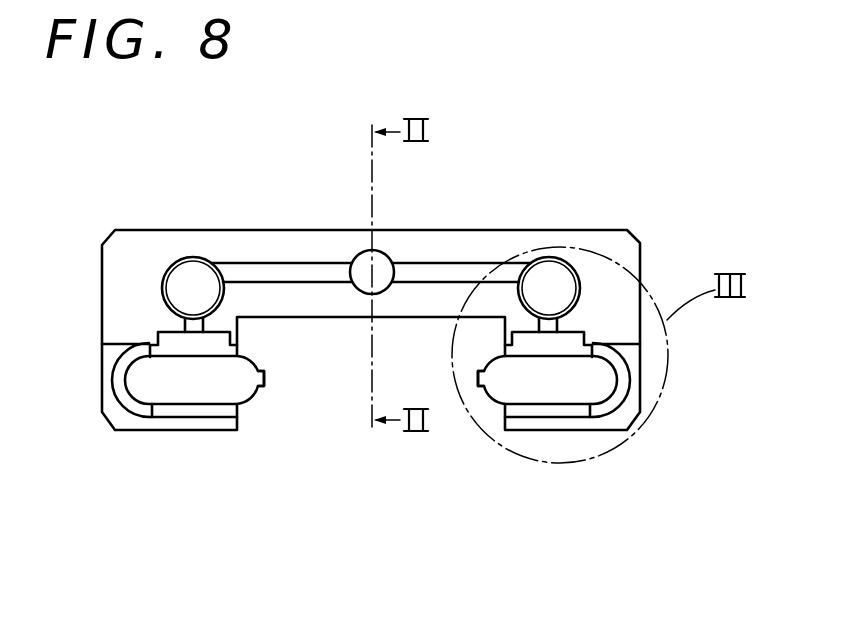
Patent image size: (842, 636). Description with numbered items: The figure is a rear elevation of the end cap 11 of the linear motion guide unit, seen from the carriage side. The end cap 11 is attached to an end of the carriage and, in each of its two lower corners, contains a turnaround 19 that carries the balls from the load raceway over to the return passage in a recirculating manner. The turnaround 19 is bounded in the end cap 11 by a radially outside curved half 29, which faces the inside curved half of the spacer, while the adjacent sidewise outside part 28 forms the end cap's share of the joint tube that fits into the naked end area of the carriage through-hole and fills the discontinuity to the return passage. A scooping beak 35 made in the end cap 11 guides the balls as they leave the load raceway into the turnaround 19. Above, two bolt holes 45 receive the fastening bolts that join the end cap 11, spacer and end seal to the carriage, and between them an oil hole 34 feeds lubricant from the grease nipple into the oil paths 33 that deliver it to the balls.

The end cap 11 is at (511, 232).
The turnaround 19 is at (182, 392).
The sidewise outside part 28 is at (118, 383).
The radially outside curved half 29 is at (205, 383).
The oil paths 33 is at (281, 273).
The oil hole 34 is at (366, 265).
The scooping beak 35 is at (257, 383).
The bolt hole 45 is at (191, 283).